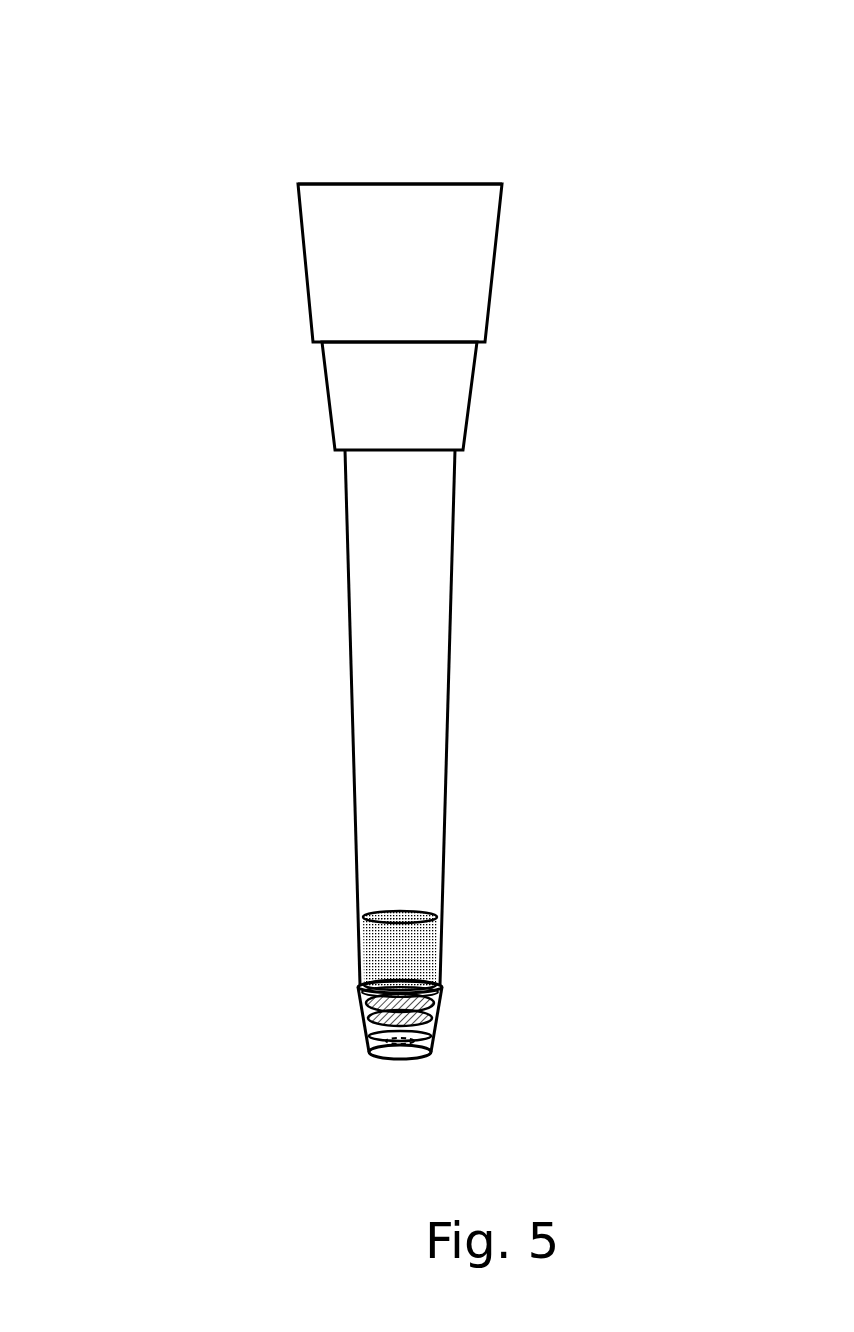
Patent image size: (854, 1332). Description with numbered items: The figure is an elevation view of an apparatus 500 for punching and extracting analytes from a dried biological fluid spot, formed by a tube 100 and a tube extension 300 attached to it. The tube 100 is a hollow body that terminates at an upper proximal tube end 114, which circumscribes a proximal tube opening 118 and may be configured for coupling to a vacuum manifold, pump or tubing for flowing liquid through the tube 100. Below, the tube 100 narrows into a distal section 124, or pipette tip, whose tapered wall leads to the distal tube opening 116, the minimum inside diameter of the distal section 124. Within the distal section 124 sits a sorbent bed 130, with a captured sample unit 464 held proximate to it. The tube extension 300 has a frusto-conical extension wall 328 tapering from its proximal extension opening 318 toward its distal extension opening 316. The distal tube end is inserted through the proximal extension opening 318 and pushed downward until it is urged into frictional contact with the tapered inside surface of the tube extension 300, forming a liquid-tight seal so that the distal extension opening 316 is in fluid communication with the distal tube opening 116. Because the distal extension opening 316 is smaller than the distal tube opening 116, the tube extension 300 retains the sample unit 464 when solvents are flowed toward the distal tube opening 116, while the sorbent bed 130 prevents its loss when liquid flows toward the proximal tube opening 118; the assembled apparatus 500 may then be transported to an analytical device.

The apparatus 500 is at (672, 104).
The tube 100 is at (190, 347).
The proximal tube end 114 is at (506, 170).
The proximal tube opening 118 is at (311, 183).
The distal section 124 is at (336, 916).
The sorbent bed 130 is at (440, 936).
The tube extension 300 is at (298, 1029).
The extension wall 328 is at (357, 999).
The proximal extension opening 318 is at (440, 988).
The sample unit 464 is at (435, 1020).
The distal extension opening 316 is at (425, 1048).
The distal tube opening 116 is at (380, 1045).